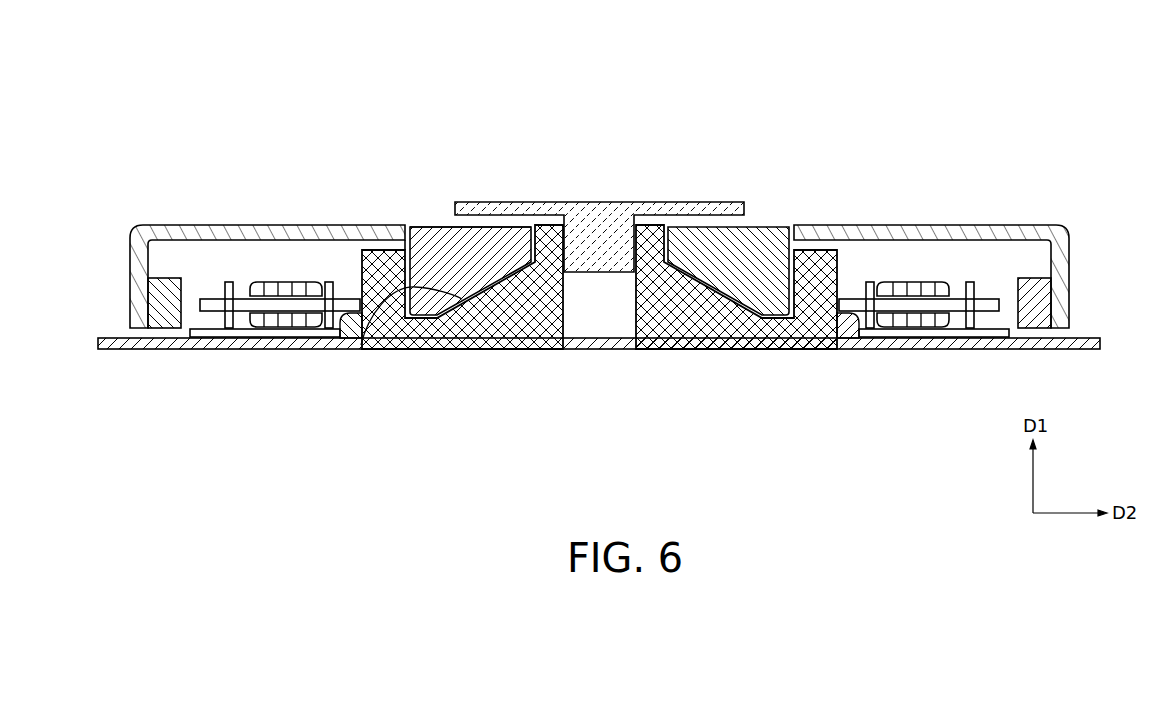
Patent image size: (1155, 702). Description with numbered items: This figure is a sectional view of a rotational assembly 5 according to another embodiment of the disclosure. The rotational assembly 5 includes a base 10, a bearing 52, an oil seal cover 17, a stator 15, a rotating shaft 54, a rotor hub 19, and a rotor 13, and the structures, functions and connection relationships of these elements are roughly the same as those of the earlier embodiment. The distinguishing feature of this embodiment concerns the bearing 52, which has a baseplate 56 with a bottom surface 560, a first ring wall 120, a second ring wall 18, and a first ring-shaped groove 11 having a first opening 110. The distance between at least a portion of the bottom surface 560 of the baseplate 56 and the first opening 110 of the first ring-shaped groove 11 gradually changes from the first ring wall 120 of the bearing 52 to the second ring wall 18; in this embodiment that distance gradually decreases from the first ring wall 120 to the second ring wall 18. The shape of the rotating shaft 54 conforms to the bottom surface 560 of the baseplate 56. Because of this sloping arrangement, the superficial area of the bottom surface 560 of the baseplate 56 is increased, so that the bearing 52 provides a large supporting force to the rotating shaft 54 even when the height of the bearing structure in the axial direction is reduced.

The rotational assembly 5 is at (150, 65).
The base 10 is at (238, 353).
The first ring-shaped groove 11 is at (446, 243).
The rotor 13 is at (162, 290).
The stator 15 is at (308, 288).
The oil seal cover 17 is at (597, 235).
The second ring wall 18 is at (395, 350).
The rotor hub 19 is at (335, 226).
The bearing 52 is at (578, 443).
The rotating shaft 54 is at (490, 243).
The baseplate 56 is at (457, 352).
The first opening 110 is at (404, 243).
The first ring wall 120 is at (545, 352).
The bottom surface 560 is at (361, 345).